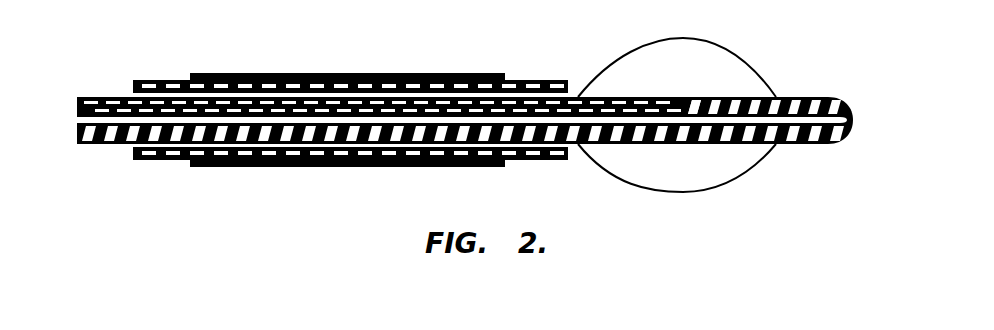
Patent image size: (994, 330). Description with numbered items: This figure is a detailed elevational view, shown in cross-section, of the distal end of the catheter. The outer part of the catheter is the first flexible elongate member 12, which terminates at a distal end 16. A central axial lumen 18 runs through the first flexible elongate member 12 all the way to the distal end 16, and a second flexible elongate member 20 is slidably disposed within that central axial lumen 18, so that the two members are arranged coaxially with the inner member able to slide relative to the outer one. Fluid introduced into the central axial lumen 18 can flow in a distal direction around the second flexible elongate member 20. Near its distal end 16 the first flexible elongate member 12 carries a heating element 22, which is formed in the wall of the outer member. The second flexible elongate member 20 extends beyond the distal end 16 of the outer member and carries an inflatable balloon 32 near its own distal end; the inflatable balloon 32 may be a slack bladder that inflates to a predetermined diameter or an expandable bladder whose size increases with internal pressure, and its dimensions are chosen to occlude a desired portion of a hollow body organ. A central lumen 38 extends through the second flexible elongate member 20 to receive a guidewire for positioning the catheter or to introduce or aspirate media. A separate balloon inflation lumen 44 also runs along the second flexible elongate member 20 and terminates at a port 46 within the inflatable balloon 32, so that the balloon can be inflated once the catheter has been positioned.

The first flexible elongate member 12 is at (154, 80).
The distal end 16 is at (551, 73).
The central axial lumen 18 is at (152, 148).
The second flexible elongate member 20 is at (102, 145).
The heating element 22 is at (408, 68).
The inflatable balloon 32 is at (737, 170).
The central lumen 38 is at (279, 120).
The balloon inflation lumen 44 is at (292, 93).
The port 46 is at (700, 97).